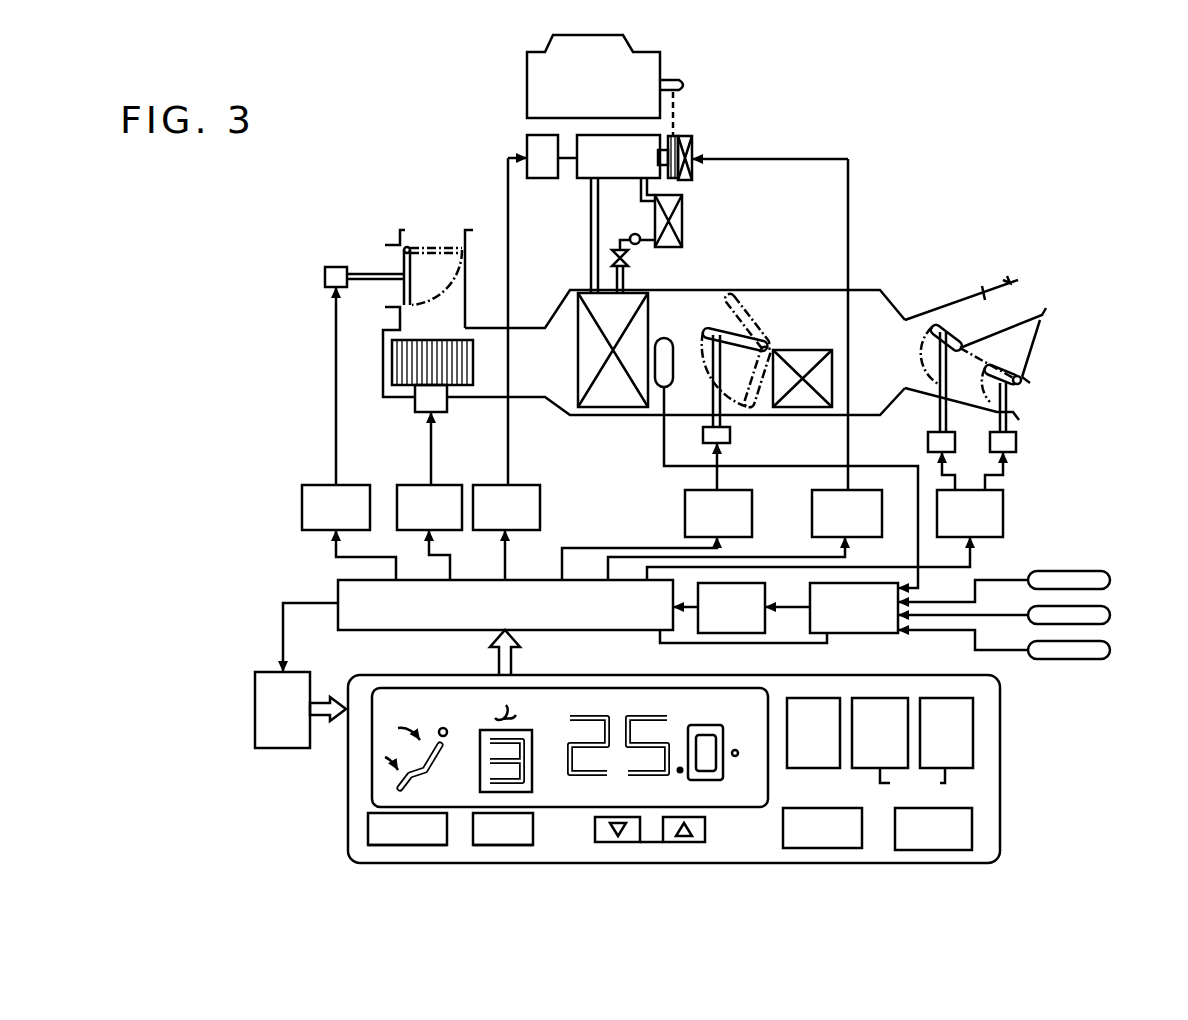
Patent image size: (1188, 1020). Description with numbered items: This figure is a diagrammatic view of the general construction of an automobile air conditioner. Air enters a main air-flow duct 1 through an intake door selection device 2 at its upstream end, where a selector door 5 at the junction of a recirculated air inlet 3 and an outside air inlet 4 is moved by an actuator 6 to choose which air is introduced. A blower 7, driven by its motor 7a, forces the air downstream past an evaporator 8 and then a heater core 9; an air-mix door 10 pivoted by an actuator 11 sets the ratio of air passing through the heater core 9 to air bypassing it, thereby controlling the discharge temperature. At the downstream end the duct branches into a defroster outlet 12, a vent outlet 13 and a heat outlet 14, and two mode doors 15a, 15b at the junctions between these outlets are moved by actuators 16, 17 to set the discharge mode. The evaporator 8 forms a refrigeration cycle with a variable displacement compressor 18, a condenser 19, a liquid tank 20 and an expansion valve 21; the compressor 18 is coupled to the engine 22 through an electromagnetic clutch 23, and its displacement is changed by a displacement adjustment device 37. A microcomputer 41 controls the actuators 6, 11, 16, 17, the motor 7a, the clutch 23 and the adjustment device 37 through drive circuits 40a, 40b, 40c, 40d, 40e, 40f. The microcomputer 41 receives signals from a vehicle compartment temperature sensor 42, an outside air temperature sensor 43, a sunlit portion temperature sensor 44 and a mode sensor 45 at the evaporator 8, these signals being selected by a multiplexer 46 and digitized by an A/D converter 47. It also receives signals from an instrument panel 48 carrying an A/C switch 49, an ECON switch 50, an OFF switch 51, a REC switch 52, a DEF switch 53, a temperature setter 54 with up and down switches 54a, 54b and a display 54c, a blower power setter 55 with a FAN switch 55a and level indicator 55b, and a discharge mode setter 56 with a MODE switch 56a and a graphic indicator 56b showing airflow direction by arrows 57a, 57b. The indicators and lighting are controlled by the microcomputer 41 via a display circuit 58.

The main air-flow duct 1 is at (556, 304).
The intake door selection device 2 is at (414, 242).
The recirculated air inlet 3 is at (378, 258).
The outside air inlet 4 is at (455, 241).
The selector door 5 is at (388, 307).
The actuator 6 is at (325, 276).
The blower 7 is at (392, 380).
The motor 7a is at (447, 400).
The evaporator 8 is at (605, 405).
The heater core 9 is at (805, 407).
The air-mix door 10 is at (705, 330).
The actuator 11 is at (730, 435).
The defroster outlet 12 is at (985, 284).
The vent outlet 13 is at (1030, 306).
The heat outlet 14 is at (1028, 400).
The mode door 15a is at (932, 324).
The mode door 15b is at (1022, 385).
The actuator 16 is at (928, 443).
The actuator 17 is at (1016, 443).
The variable displacement compressor 18 is at (586, 180).
The condenser 19 is at (682, 206).
The liquid tank 20 is at (641, 242).
The expansion valve 21 is at (628, 263).
The engine 22 is at (527, 88).
The electromagnetic clutch 23 is at (692, 146).
The displacement adjustment device 37 is at (527, 142).
The drive circuit 40a is at (312, 487).
The drive circuit 40b is at (690, 500).
The drive circuit 40c is at (1000, 512).
The drive circuit 40d is at (410, 487).
The drive circuit 40e is at (815, 500).
The drive circuit 40f is at (545, 468).
The microcomputer 41 is at (338, 592).
The vehicle compartment temperature sensor 42 is at (1112, 584).
The outside air temperature sensor 43 is at (1112, 619).
The sunlit portion temperature sensor 44 is at (1112, 654).
The mode sensor 45 is at (664, 338).
The multiplexer 46 is at (855, 633).
The A/D converter 47 is at (763, 583).
The instrument panel 48 is at (348, 846).
The A/C switch 49 is at (977, 738).
The ECON switch 50 is at (896, 702).
The OFF switch 51 is at (803, 698).
The REC switch 52 is at (945, 850).
The DEF switch 53 is at (845, 848).
The temperature setter 54 is at (660, 848).
The up switch 54a is at (705, 838).
The down switch 54b is at (628, 846).
The display 54c is at (628, 713).
The blower power setter 55 is at (512, 850).
The FAN switch 55a is at (533, 846).
The level indicator 55b is at (528, 738).
The discharge mode setter 56 is at (403, 848).
The MODE switch 56a is at (442, 848).
The graphic indicator 56b is at (446, 728).
The arrow 57a is at (396, 735).
The arrow 57b is at (384, 760).
The display circuit 58 is at (255, 721).